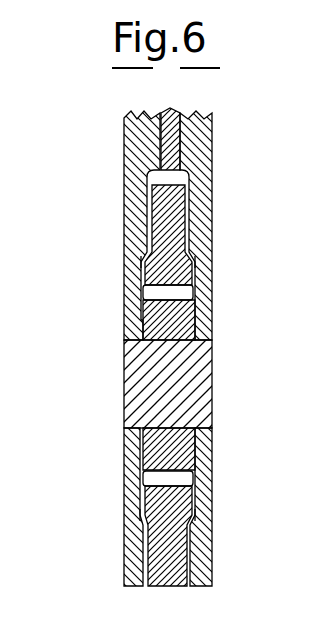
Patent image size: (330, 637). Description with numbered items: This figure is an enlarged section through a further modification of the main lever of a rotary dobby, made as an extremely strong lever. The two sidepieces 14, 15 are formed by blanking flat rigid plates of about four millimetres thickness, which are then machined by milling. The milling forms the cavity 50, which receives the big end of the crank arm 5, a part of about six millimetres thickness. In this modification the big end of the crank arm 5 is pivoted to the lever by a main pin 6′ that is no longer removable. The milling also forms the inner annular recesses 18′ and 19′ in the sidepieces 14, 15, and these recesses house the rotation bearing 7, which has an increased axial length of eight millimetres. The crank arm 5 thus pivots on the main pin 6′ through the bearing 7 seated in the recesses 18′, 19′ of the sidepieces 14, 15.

The crank arm 5 is at (176, 249).
The main pin 6′ is at (178, 389).
The rotation bearing 7 is at (176, 292).
The sidepiece 14 is at (134, 221).
The sidepiece 15 is at (206, 189).
The inner annular recess 18′ is at (138, 274).
The inner annular recess 19′ is at (200, 270).
The cavity 50 is at (179, 177).